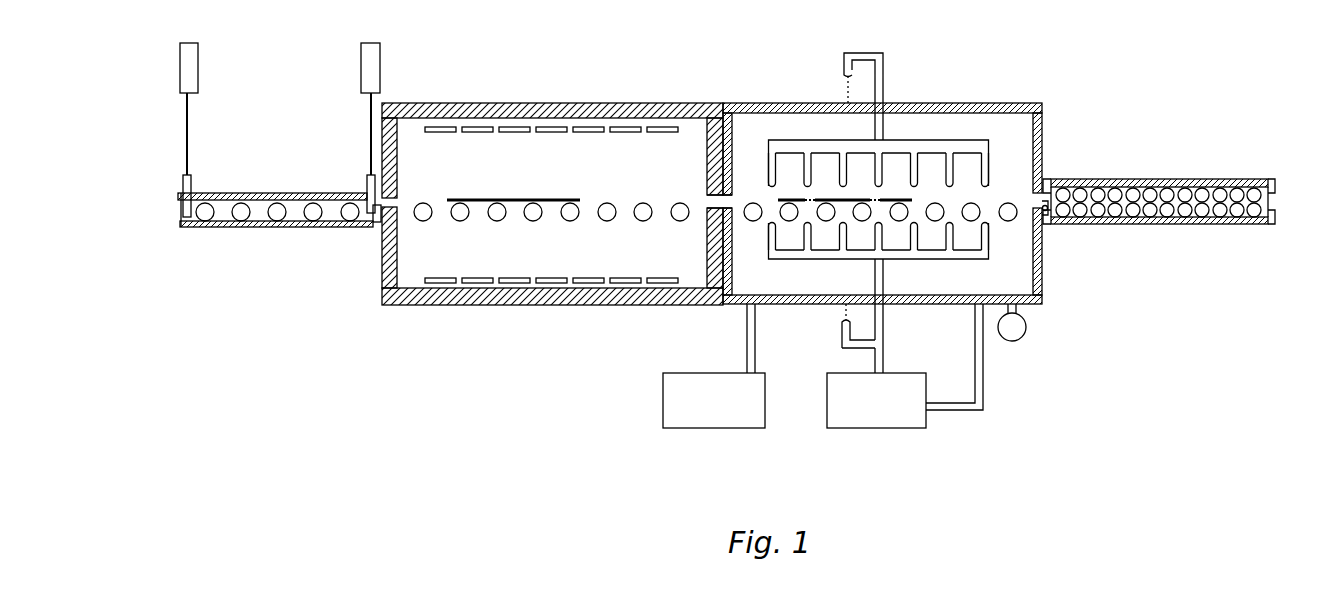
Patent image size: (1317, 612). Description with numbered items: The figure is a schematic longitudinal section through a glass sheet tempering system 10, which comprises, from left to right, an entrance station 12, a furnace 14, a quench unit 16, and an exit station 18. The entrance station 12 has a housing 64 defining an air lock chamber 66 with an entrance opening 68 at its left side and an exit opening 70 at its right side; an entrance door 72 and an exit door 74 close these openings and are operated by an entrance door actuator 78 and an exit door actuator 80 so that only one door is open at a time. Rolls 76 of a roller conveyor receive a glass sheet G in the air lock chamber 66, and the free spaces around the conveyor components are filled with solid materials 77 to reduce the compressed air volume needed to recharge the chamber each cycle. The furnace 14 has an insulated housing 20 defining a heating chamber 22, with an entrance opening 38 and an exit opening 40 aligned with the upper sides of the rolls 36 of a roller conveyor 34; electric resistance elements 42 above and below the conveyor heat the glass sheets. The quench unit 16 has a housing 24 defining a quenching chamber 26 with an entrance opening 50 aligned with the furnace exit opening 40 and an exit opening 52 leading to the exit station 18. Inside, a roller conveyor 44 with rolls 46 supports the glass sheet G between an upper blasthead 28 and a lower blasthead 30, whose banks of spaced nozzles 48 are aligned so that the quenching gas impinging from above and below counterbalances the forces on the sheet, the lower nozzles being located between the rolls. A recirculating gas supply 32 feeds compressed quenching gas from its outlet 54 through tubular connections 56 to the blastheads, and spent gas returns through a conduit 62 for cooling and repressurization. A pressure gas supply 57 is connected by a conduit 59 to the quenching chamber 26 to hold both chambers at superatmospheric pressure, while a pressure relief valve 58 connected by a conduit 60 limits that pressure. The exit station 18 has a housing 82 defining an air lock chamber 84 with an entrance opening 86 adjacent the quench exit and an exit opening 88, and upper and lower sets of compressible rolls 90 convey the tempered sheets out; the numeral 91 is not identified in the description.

The tempering system 10 is at (728, 224).
The entrance station 12 is at (305, 156).
The furnace 14 is at (552, 190).
The quench unit 16 is at (834, 224).
The exit station 18 is at (1176, 165).
The insulated housing 20 is at (493, 78).
The heating chamber 22 is at (693, 118).
The housing 24 is at (911, 103).
The quenching chamber 26 is at (794, 118).
The upper blasthead 28 is at (955, 139).
The lower blasthead 30 is at (987, 260).
The recirculating gas supply 32 is at (827, 398).
The roller conveyor 34 is at (594, 198).
The rolls 36 is at (604, 221).
The entrance opening 38 is at (398, 203).
The exit opening 40 is at (705, 202).
The electric resistance elements 42 is at (583, 127).
The roller conveyor 44 is at (1001, 194).
The rolls 46 is at (982, 213).
The nozzles 48 is at (919, 166).
The entrance opening 50 is at (729, 200).
The exit opening 52 is at (1046, 213).
The outlet 54 is at (886, 350).
The tubular connections 56 is at (858, 53).
The pressure gas supply 57 is at (663, 388).
The pressure relief valve 58 is at (1026, 334).
The conduit 59 is at (747, 330).
The conduit 60 is at (1018, 310).
The conduit 62 is at (983, 396).
The housing 64 is at (241, 193).
The air lock chamber 66 is at (262, 222).
The entrance opening 68 is at (180, 205).
The exit opening 70 is at (378, 223).
The entrance door 72 is at (190, 186).
The exit door 74 is at (370, 182).
The rolls 76 is at (279, 203).
The solid materials 77 is at (298, 216).
The entrance door actuator 78 is at (199, 75).
The exit door actuator 80 is at (381, 61).
The housing 82 is at (1143, 180).
The air lock chamber 84 is at (1177, 214).
The entrance opening 86 is at (1080, 180).
The exit opening 88 is at (1273, 206).
The compressible rolls 90 is at (1199, 189).
The exit conveyor lower bracket 91 is at (1120, 226).
The glass sheet G is at (498, 200).